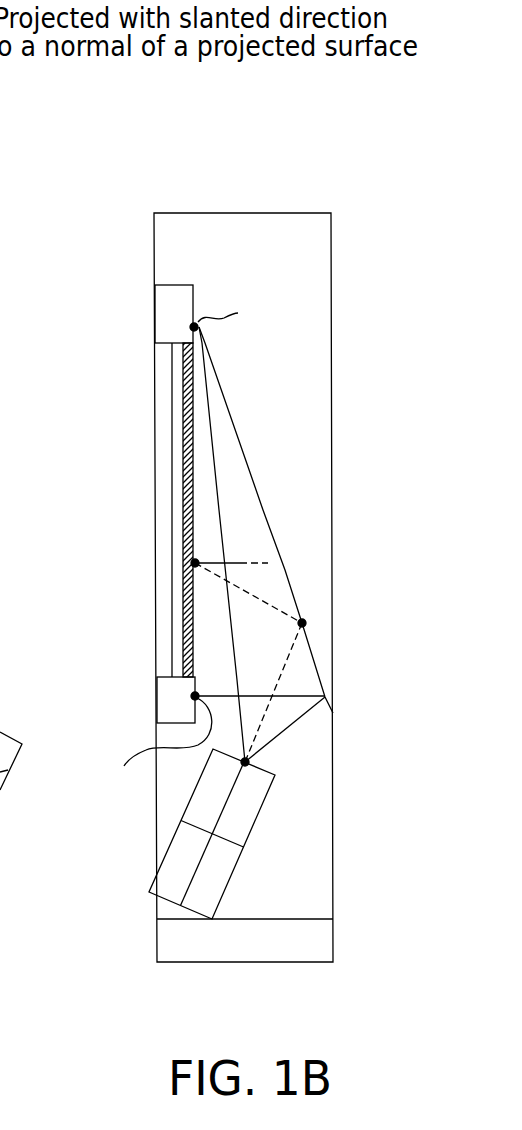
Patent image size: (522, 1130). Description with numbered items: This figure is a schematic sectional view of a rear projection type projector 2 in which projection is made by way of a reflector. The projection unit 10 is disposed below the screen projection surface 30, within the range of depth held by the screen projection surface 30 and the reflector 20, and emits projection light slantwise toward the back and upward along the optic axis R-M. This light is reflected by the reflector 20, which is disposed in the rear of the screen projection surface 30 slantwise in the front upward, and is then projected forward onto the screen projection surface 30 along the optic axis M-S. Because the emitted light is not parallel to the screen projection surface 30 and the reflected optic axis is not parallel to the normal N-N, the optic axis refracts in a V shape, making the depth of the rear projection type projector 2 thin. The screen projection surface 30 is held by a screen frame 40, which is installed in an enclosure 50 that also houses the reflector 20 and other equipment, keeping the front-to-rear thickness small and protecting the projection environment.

The rear projection type projector 2 is at (314, 150).
The projection unit 10 is at (177, 863).
The reflector 20 is at (285, 570).
The screen projection surface 30 is at (183, 513).
The screen frame 40 is at (162, 308).
The enclosure 50 is at (185, 213).